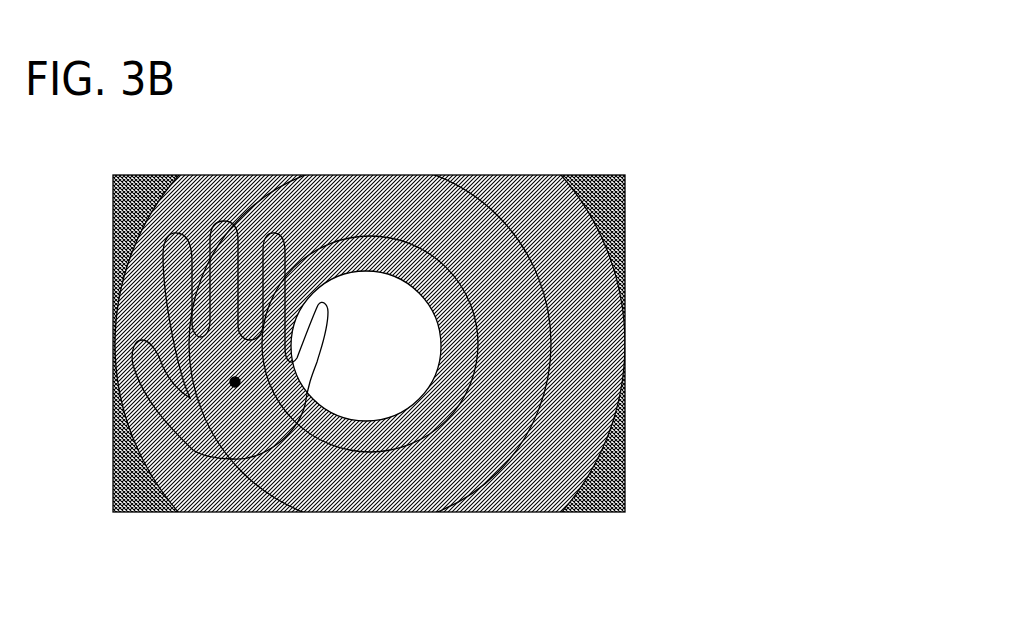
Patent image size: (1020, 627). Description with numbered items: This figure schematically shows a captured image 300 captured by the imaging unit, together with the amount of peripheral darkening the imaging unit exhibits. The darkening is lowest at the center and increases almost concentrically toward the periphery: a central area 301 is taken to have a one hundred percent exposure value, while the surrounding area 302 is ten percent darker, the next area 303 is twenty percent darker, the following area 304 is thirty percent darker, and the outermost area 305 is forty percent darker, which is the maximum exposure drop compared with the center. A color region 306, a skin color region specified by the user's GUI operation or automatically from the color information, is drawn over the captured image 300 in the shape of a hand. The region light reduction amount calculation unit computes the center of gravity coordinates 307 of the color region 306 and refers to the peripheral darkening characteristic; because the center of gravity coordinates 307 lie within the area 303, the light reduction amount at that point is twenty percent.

The captured image 300 is at (585, 176).
The area 301 is at (425, 376).
The area 302 is at (520, 413).
The area 303 is at (460, 398).
The area 304 is at (607, 341).
The area 305 is at (622, 210).
The color region 306 is at (273, 268).
The center of gravity coordinates 307 is at (237, 389).